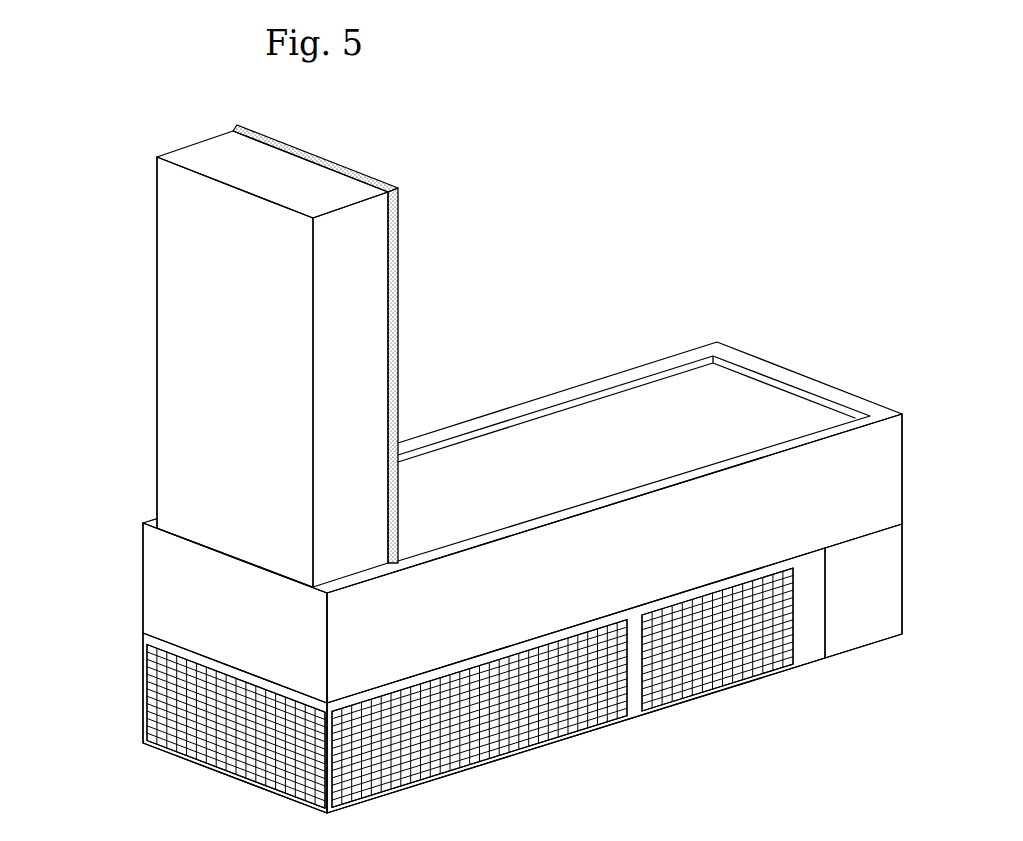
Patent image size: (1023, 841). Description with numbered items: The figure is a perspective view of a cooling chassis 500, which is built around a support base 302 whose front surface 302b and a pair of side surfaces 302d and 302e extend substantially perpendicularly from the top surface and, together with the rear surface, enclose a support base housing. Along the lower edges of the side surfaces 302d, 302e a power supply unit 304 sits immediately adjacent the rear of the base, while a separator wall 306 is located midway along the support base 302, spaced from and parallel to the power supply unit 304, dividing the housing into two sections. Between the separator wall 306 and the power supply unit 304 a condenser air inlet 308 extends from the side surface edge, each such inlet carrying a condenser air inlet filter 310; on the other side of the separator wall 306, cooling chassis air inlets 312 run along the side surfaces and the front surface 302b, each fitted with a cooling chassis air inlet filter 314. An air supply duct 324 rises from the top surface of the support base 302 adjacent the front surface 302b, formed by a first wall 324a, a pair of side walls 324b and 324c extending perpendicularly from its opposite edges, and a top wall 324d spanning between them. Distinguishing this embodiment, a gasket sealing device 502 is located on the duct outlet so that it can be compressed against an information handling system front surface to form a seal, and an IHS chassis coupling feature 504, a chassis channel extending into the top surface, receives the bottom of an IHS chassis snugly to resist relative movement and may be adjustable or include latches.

The cooling chassis 500 is at (630, 125).
The support base 302 is at (912, 449).
The front surface 302b is at (158, 595).
The side surface 302d is at (895, 475).
The side surface 302e is at (143, 548).
The power supply unit 304 is at (885, 607).
The separator wall 306 is at (635, 640).
The condenser air inlet 308 is at (818, 640).
The condenser air inlet filter 310 is at (755, 648).
The cooling chassis air inlet 312 is at (134, 690).
The cooling chassis air inlet filter 314 is at (183, 722).
The air supply duct 324 is at (148, 266).
The first wall 324a is at (165, 357).
The side wall 324b is at (372, 378).
The side wall 324c is at (157, 190).
The top wall 324d is at (205, 152).
The gasket sealing device 502 is at (327, 160).
The IHS chassis coupling feature 504 is at (625, 415).